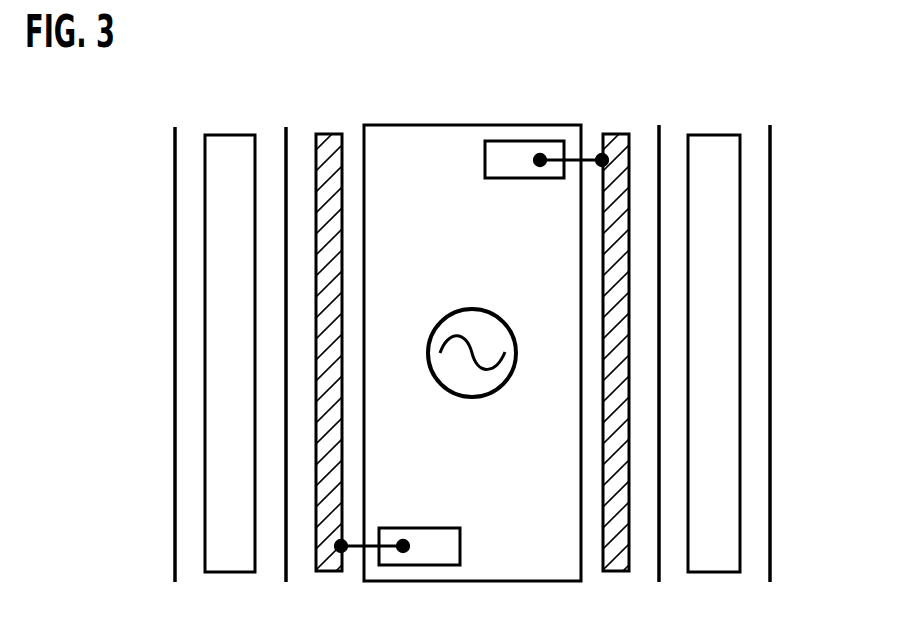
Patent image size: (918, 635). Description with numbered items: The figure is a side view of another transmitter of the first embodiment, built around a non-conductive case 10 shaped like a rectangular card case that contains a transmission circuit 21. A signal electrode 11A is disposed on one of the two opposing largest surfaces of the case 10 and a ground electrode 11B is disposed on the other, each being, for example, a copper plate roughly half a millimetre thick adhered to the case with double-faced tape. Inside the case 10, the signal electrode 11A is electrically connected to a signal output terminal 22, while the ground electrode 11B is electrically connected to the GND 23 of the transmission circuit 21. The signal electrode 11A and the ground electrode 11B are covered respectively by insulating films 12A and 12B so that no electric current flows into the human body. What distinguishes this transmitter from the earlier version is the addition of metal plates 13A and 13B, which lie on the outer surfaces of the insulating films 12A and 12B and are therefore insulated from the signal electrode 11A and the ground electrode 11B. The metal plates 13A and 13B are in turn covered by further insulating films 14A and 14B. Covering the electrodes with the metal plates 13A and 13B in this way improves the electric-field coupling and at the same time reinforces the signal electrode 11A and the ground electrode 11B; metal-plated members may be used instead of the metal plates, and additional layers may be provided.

The case 10 is at (440, 125).
The signal electrode 11A is at (612, 134).
The ground electrode 11B is at (334, 134).
The insulating film 12A is at (660, 126).
The insulating film 12B is at (286, 127).
The metal plate 13A is at (712, 135).
The metal plate 13B is at (231, 135).
The insulating film 14A is at (771, 126).
The insulating film 14B is at (176, 127).
The transmission circuit 21 is at (450, 315).
The signal output terminal 22 is at (528, 178).
The GND 23 is at (461, 545).